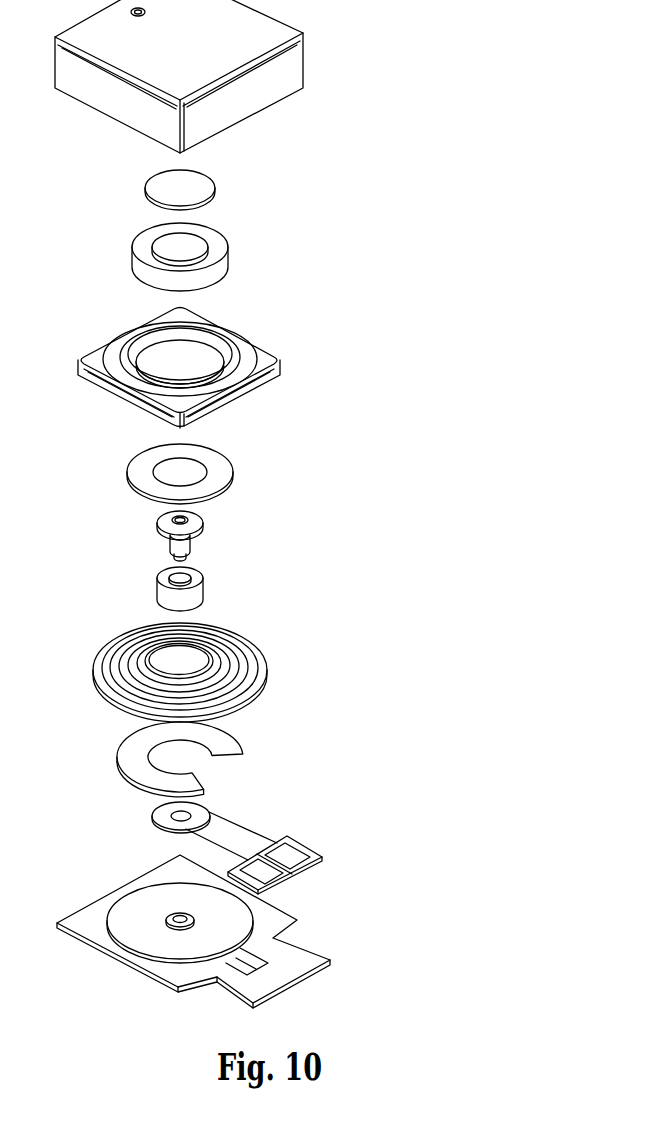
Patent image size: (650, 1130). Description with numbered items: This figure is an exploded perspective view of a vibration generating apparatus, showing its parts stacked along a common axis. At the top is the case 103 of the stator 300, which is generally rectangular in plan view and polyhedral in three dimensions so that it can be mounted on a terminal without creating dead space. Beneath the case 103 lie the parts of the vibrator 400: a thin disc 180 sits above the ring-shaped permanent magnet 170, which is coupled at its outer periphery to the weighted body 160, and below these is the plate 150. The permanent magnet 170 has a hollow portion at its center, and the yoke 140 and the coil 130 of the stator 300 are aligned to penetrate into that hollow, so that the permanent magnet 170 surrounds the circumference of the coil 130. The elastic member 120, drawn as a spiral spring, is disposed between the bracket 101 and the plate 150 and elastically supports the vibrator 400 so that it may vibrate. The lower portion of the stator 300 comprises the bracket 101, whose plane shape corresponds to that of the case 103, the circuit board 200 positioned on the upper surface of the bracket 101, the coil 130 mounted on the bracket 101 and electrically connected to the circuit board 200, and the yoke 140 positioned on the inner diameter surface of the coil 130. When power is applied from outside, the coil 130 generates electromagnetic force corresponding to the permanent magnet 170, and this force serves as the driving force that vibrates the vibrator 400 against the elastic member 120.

The case 103 is at (298, 80).
The cover disc 180 is at (208, 190).
The permanent magnet 170 is at (230, 260).
The vibrator 400 is at (323, 250).
The weighted body 160 is at (282, 358).
The plate 150 is at (225, 473).
The yoke 140 is at (203, 527).
The coil 130 is at (203, 595).
The elastic member 120 is at (267, 667).
The circuit board 200 is at (322, 857).
The bracket 101 is at (297, 920).
The stator 300 is at (452, 583).